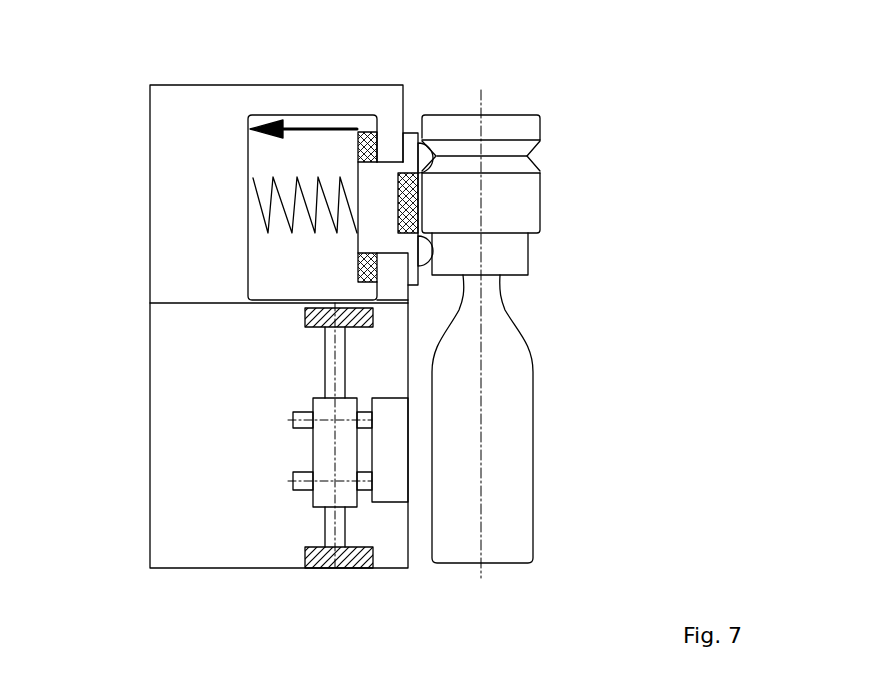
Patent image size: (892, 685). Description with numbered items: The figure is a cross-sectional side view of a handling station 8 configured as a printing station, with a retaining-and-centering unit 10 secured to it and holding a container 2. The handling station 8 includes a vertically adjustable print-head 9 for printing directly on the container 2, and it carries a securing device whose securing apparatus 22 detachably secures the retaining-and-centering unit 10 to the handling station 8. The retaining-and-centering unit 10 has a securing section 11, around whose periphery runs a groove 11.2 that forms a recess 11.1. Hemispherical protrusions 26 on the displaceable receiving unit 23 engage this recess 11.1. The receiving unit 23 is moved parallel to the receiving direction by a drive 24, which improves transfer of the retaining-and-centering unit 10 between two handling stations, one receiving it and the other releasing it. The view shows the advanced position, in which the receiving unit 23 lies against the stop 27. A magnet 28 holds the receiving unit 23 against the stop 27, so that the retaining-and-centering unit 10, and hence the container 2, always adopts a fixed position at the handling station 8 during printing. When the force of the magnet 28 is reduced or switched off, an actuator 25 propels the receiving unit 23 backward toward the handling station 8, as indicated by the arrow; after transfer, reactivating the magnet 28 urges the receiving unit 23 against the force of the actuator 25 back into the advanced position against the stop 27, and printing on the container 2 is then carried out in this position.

The container 2 is at (530, 487).
The handling station 8 is at (130, 130).
The print-head 9 is at (388, 500).
The retaining-and-centering unit 10 is at (565, 123).
The securing section 11 is at (540, 203).
The recess 11.1 is at (527, 153).
The groove 11.2 is at (624, 174).
The securing apparatus 22 is at (411, 172).
The receiving unit 23 is at (348, 260).
The drive 24 is at (358, 130).
The actuator 25 is at (297, 178).
The protrusions 26 is at (427, 157).
The stop 27 is at (370, 132).
The magnet 28 is at (317, 147).